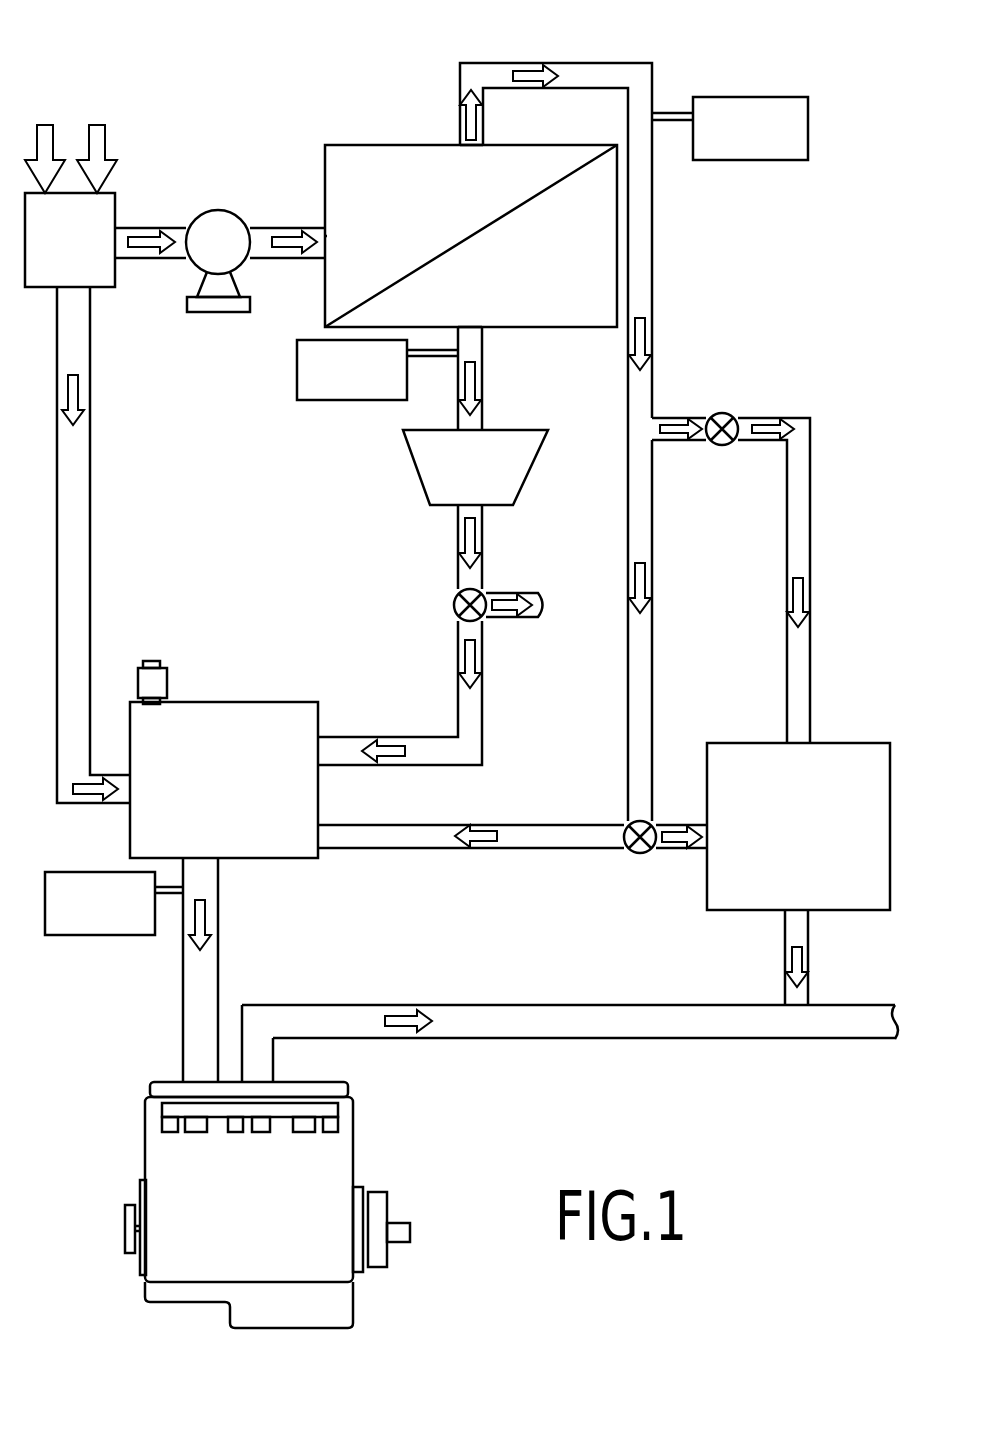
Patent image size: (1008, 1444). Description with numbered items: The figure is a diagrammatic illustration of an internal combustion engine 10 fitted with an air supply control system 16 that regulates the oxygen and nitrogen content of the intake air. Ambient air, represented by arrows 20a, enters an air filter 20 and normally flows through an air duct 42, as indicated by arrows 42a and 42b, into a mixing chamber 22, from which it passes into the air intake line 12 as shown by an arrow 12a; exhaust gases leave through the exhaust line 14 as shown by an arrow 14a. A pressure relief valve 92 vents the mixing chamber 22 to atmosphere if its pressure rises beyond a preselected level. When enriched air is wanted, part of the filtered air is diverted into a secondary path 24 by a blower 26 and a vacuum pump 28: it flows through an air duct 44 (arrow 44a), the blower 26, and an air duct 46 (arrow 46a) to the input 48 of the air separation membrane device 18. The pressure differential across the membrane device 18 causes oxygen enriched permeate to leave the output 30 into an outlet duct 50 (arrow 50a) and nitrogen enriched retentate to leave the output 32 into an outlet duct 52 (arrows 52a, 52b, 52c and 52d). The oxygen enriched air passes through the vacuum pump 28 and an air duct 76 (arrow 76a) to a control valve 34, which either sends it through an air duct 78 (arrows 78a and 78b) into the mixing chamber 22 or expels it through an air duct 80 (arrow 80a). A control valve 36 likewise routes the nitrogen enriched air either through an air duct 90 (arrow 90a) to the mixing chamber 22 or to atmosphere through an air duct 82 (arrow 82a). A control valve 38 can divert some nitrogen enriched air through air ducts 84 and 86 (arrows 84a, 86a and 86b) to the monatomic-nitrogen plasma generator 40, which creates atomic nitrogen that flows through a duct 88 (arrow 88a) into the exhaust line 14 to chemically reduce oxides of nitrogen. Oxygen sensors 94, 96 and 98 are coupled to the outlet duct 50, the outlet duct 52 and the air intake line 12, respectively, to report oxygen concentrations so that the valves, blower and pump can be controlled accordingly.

The internal combustion engine 10 is at (162, 1305).
The air intake line 12 is at (183, 1004).
The arrow 12a is at (218, 916).
The exhaust line 14 is at (530, 1042).
The arrow 14a is at (430, 1012).
The air supply control system 16 is at (228, 105).
The air separation membrane device 18 is at (393, 145).
The air filter 20 is at (113, 193).
The arrows 20a is at (97, 122).
The mixing chamber 22 is at (318, 702).
The secondary path 24 is at (249, 362).
The blower 26 is at (232, 210).
The vacuum pump 28 is at (548, 432).
The output 30 is at (483, 330).
The output 32 is at (487, 147).
The control valve 34 is at (485, 596).
The control valve 36 is at (643, 821).
The control valve 38 is at (722, 413).
The monatomic-nitrogen plasma generator 40 is at (722, 743).
The air duct 42 is at (92, 515).
The arrow 42a is at (92, 396).
The arrow 42b is at (92, 776).
The air duct 44 is at (172, 228).
The arrow 44a is at (148, 256).
The air duct 46 is at (284, 228).
The arrow 46a is at (293, 258).
The input 48 is at (326, 241).
The outlet duct 50 is at (483, 362).
The arrow 50a is at (481, 388).
The outlet duct 52 is at (497, 63).
The arrow 52a is at (463, 95).
The arrow 52b is at (560, 70).
The arrow 52c is at (652, 325).
The arrow 52d is at (652, 573).
The air duct 76 is at (458, 546).
The arrow 76a is at (482, 536).
The air duct 78 is at (483, 708).
The arrow 78a is at (482, 661).
The arrow 78b is at (390, 766).
The air duct 80 is at (546, 595).
The arrow 80a is at (525, 618).
The air duct 82 is at (666, 826).
The arrow 82a is at (681, 850).
The air duct 84 is at (670, 418).
The arrow 84a is at (690, 442).
The air duct 86 is at (770, 418).
The arrow 86a is at (786, 442).
The arrow 86b is at (800, 596).
The duct 88 is at (785, 941).
The arrow 88a is at (792, 960).
The air duct 90 is at (520, 824).
The arrow 90a is at (480, 849).
The pressure relief valve 92 is at (158, 662).
The oxygen sensor 94 is at (322, 400).
The oxygen sensor 96 is at (774, 160).
The oxygen sensor 98 is at (97, 935).